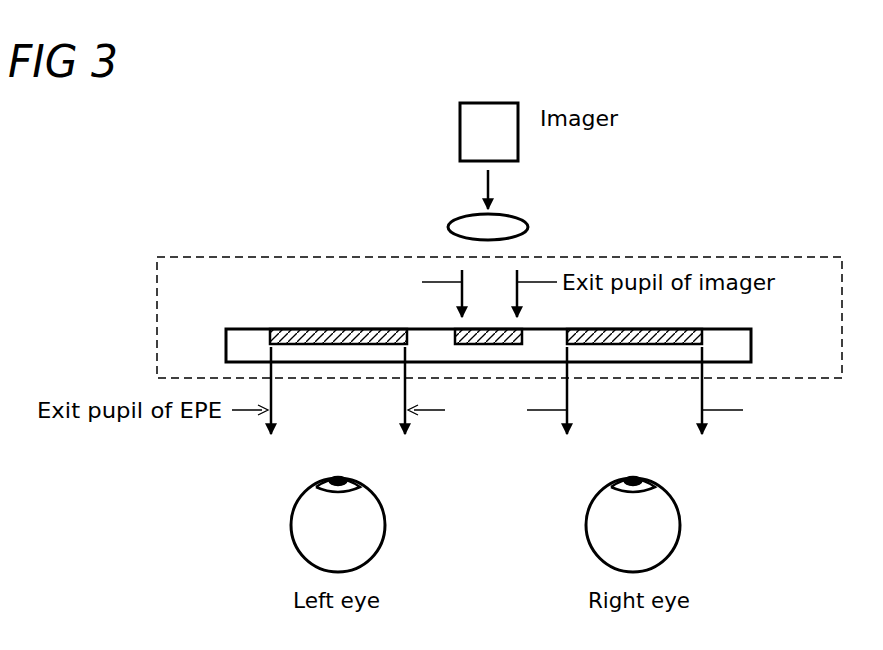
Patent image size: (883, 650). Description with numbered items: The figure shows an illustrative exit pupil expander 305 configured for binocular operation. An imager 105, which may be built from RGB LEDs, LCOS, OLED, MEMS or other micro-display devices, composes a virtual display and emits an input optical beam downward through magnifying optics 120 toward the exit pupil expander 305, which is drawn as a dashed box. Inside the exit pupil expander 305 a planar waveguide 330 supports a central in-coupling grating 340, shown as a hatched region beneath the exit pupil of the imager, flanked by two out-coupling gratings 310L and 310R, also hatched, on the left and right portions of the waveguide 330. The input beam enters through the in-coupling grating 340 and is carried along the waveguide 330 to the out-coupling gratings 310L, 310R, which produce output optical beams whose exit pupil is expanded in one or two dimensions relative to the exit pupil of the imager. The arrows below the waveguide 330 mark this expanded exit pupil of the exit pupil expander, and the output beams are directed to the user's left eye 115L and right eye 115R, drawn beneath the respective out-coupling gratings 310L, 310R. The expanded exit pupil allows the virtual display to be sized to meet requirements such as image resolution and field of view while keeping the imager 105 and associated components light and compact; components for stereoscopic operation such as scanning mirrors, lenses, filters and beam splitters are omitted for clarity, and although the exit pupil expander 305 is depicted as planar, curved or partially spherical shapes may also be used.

The imager 105 is at (460, 128).
The magnifying optics 120 is at (528, 228).
The exit pupil expander 305 is at (157, 292).
The waveguide 330 is at (753, 333).
The out-coupling grating 310L is at (298, 329).
The in-coupling grating 340 is at (453, 333).
The out-coupling grating 310R is at (702, 337).
The left eye 115L is at (387, 527).
The right eye 115R is at (682, 527).